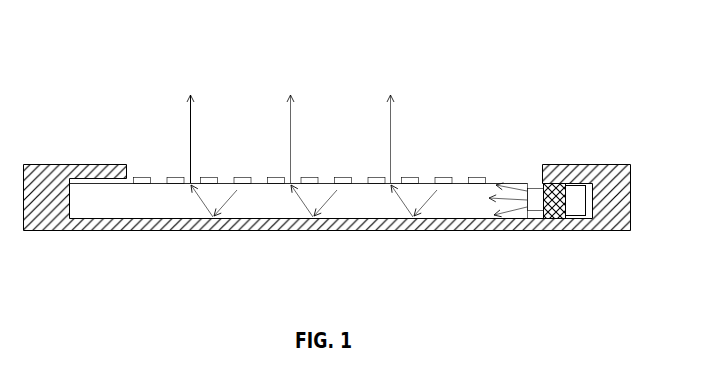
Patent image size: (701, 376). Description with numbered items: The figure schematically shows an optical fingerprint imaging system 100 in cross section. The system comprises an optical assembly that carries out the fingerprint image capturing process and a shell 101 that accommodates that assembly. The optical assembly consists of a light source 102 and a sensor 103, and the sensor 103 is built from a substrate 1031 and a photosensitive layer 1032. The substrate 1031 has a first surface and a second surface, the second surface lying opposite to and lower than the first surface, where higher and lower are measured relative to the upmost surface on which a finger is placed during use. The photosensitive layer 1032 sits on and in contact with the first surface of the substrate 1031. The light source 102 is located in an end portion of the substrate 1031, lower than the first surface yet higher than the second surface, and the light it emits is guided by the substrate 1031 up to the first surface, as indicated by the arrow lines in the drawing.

The optical fingerprint imaging system 100 is at (288, 75).
The shell 101 is at (44, 164).
The light source 102 is at (539, 189).
The sensor 103 is at (423, 160).
The substrate 1031 is at (223, 192).
The photosensitive layer 1032 is at (305, 178).